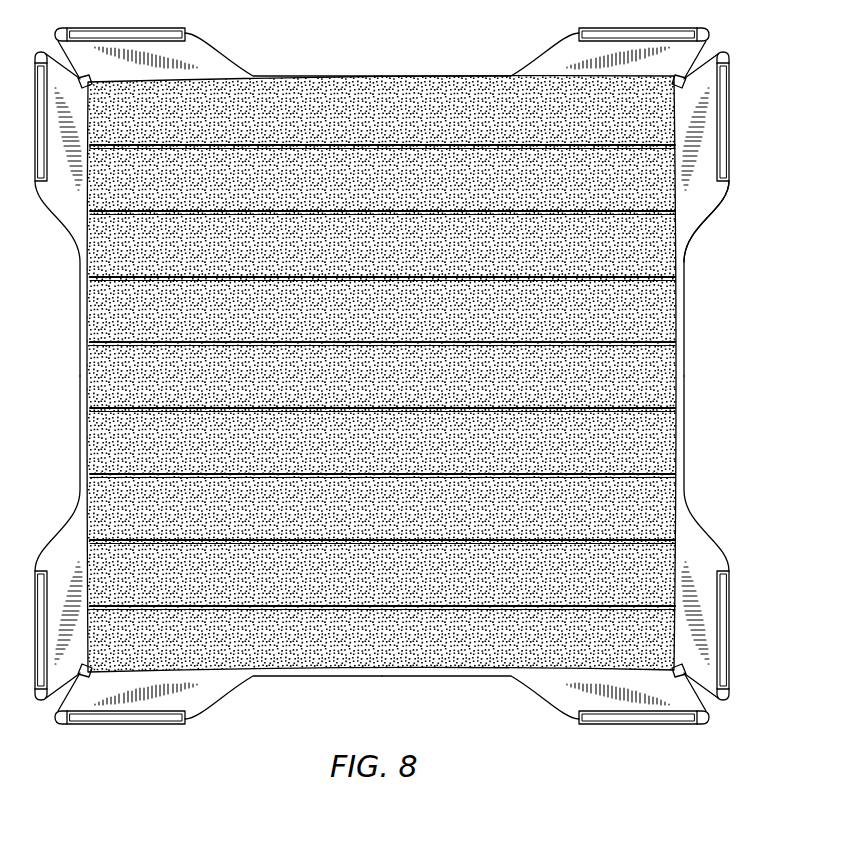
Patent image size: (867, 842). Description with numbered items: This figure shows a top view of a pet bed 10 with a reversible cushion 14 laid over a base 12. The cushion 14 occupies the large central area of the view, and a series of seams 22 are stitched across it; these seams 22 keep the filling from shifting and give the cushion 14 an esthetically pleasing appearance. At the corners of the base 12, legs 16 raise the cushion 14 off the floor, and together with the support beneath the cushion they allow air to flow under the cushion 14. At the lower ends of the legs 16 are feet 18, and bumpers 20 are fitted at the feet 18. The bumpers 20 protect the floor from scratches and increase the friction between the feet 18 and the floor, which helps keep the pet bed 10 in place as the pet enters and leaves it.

The pet bed 10 is at (397, 376).
The base 12 is at (70, 211).
The cushion 14 is at (407, 374).
The legs 16 is at (391, 76).
The feet 18 is at (699, 209).
The bumpers 20 is at (724, 121).
The seams 22 is at (643, 407).